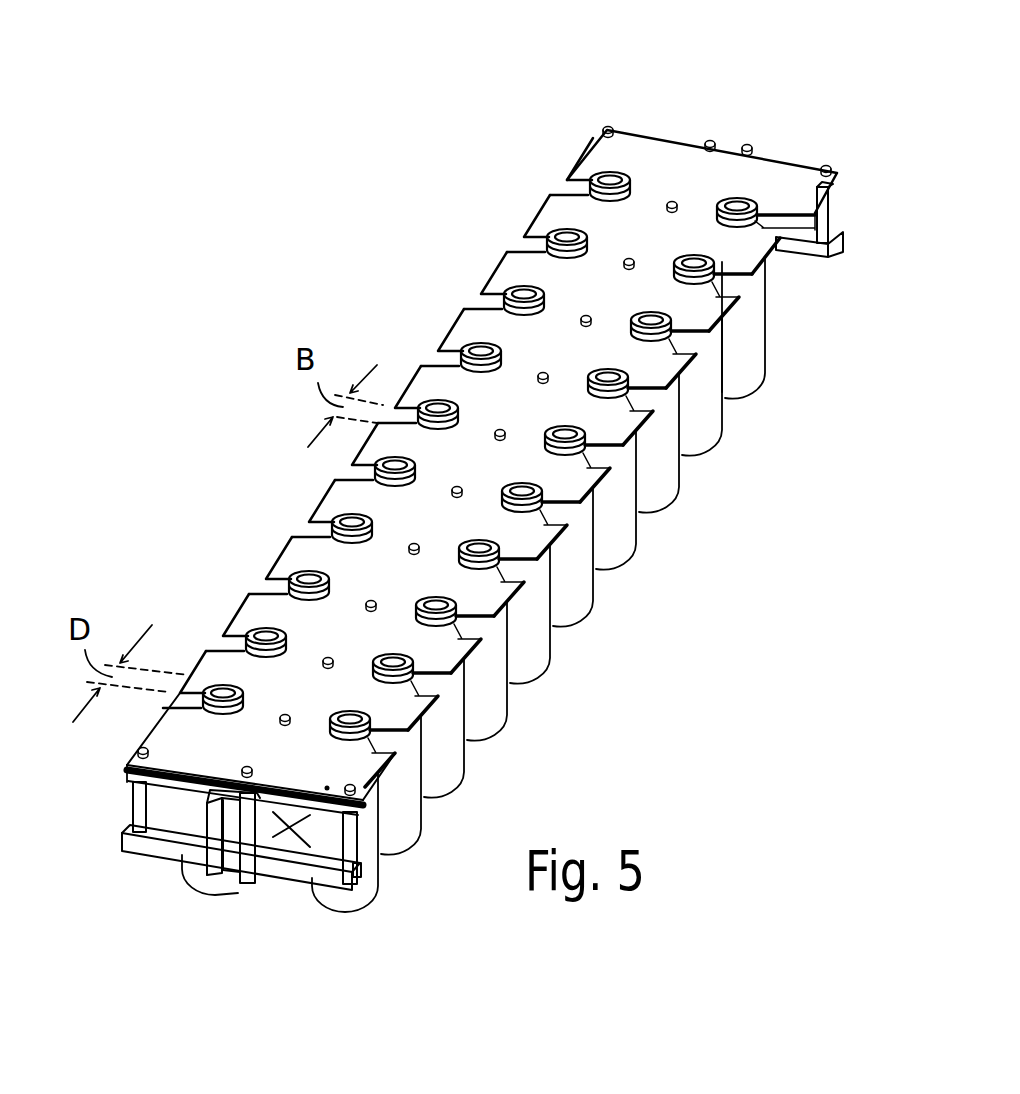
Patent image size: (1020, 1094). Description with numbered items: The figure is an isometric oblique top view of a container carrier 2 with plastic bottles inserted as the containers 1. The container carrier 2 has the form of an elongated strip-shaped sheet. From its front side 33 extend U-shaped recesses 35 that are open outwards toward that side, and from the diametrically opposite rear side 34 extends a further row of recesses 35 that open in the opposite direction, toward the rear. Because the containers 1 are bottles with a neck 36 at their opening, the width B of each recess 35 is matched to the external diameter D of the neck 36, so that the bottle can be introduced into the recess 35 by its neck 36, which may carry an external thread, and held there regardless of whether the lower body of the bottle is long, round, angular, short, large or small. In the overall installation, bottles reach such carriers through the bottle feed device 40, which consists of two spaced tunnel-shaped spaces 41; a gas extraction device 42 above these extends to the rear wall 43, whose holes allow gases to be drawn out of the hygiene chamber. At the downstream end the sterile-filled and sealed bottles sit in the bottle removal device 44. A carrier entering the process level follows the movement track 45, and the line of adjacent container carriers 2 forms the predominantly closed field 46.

The container 1 is at (700, 437).
The container carrier 2 is at (670, 155).
The front side 33 is at (782, 257).
The rear side 34 is at (505, 295).
The recess 35 is at (330, 528).
The neck 36 is at (430, 688).
The bottle feed device 40 is at (137, 776).
The tunnel-shaped space 41 is at (825, 222).
The gas extraction device 42 is at (284, 872).
The rear wall 43 is at (217, 812).
The bottle removal device 44 is at (233, 843).
The movement track 45 is at (270, 815).
The closed field 46 is at (837, 247).